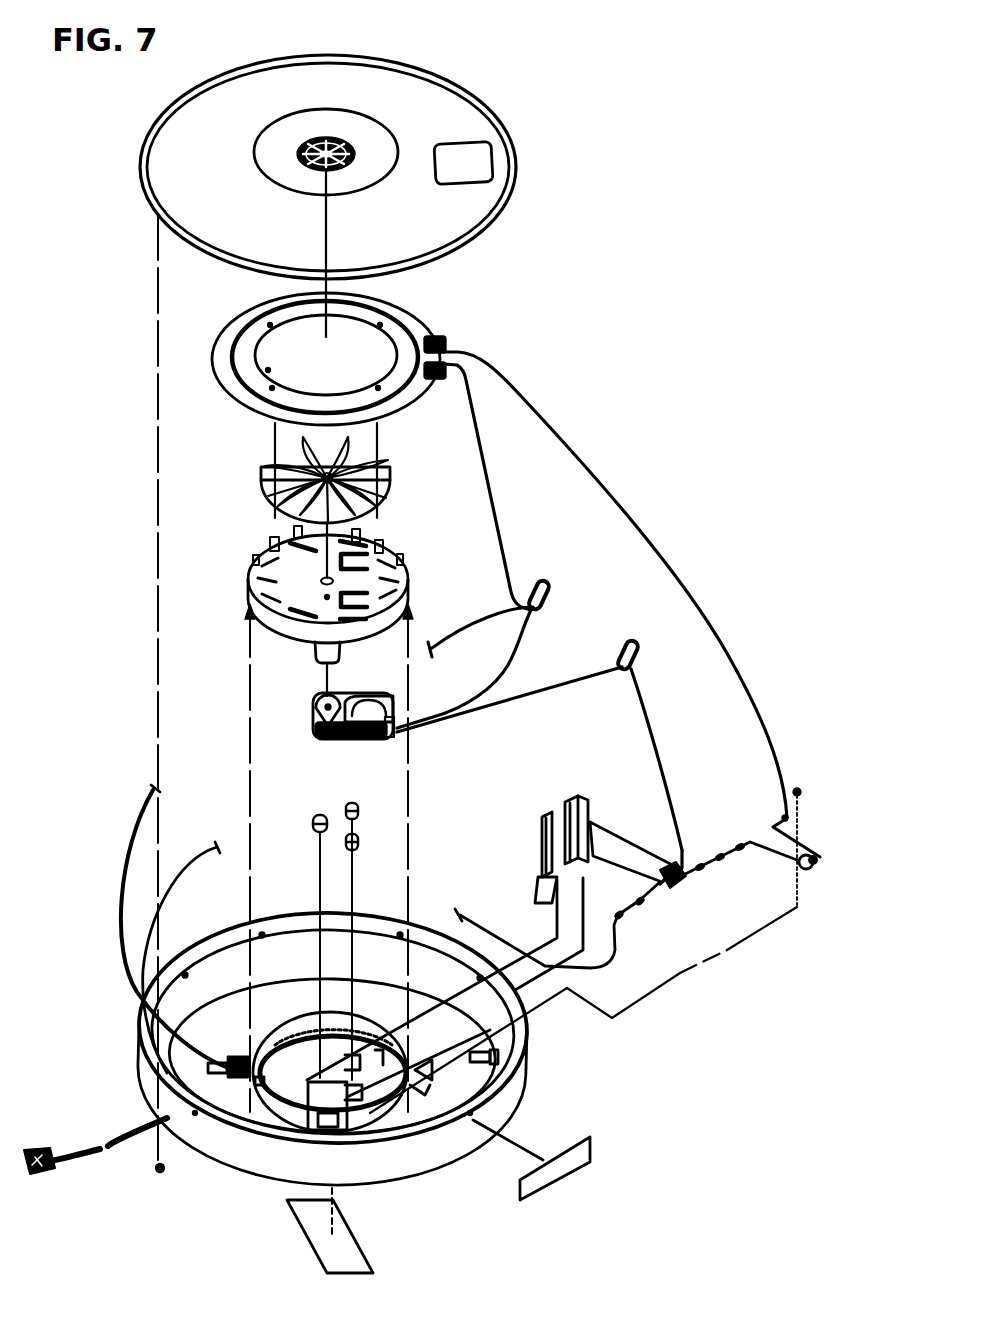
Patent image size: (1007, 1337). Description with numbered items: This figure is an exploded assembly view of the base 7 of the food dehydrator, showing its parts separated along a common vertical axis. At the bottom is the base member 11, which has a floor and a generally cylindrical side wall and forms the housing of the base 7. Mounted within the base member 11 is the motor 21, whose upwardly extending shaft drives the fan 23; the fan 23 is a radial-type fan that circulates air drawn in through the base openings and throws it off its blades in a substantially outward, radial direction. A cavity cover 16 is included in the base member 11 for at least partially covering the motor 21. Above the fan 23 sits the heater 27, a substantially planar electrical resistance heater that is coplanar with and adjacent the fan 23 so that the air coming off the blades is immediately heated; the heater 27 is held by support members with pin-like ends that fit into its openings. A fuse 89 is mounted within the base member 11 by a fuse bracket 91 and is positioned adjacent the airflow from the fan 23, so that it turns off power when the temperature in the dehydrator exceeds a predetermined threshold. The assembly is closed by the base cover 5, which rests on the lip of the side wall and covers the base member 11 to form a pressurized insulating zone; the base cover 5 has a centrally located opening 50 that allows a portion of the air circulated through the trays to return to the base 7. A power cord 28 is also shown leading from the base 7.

The base cover 5 is at (440, 128).
The centrally located opening 50 is at (336, 134).
The heater 27 is at (388, 316).
The fan 23 is at (383, 470).
The cavity cover 16 is at (248, 578).
The motor 21 is at (316, 703).
The fuse bracket 91 is at (548, 830).
The fuse 89 is at (656, 878).
The base 7 is at (815, 792).
The power cord 28 is at (255, 1162).
The base member 11 is at (405, 1160).